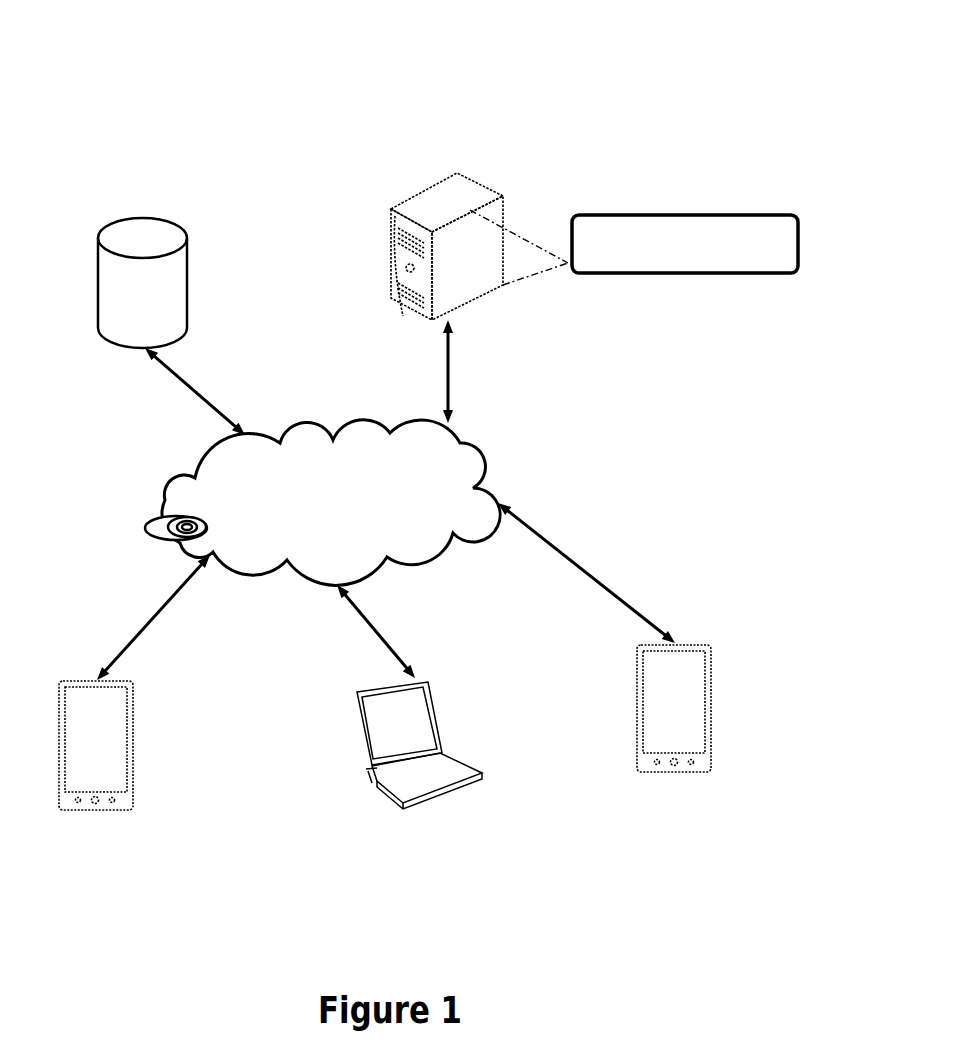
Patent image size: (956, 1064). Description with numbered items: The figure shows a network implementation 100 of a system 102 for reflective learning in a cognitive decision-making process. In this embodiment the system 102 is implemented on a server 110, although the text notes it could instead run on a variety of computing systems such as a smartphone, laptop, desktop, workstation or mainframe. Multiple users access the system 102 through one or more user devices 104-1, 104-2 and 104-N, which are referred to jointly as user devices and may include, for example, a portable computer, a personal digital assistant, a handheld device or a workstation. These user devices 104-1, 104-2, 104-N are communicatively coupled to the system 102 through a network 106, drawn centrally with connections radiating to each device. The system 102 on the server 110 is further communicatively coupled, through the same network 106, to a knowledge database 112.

The network implementation 100 is at (726, 59).
The system 102 is at (634, 247).
The user device 104-1 is at (129, 673).
The user device 104-2 is at (430, 667).
The user device 104-N is at (698, 636).
The network 106 is at (322, 503).
The server 110 is at (466, 164).
The knowledge database 112 is at (146, 204).